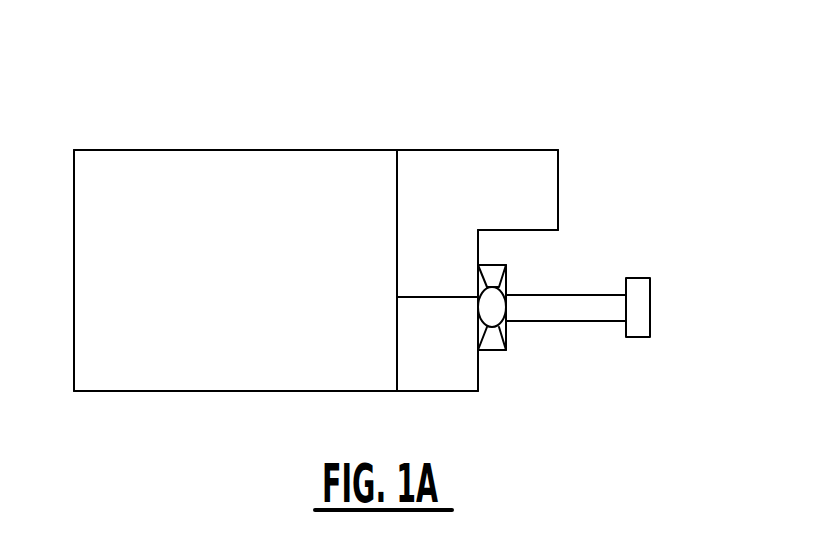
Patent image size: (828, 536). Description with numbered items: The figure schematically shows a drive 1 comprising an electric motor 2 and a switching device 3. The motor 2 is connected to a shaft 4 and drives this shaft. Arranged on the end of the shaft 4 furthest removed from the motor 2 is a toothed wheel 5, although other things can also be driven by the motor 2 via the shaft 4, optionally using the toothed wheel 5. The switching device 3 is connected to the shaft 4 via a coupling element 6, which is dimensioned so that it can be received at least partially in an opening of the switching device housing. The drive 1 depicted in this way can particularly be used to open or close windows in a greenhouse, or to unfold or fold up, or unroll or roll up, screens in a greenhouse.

The drive 1 is at (262, 68).
The electric motor 2 is at (327, 188).
The switching device 3 is at (468, 175).
The shaft 4 is at (575, 308).
The toothed wheel 5 is at (647, 314).
The coupling element 6 is at (495, 312).